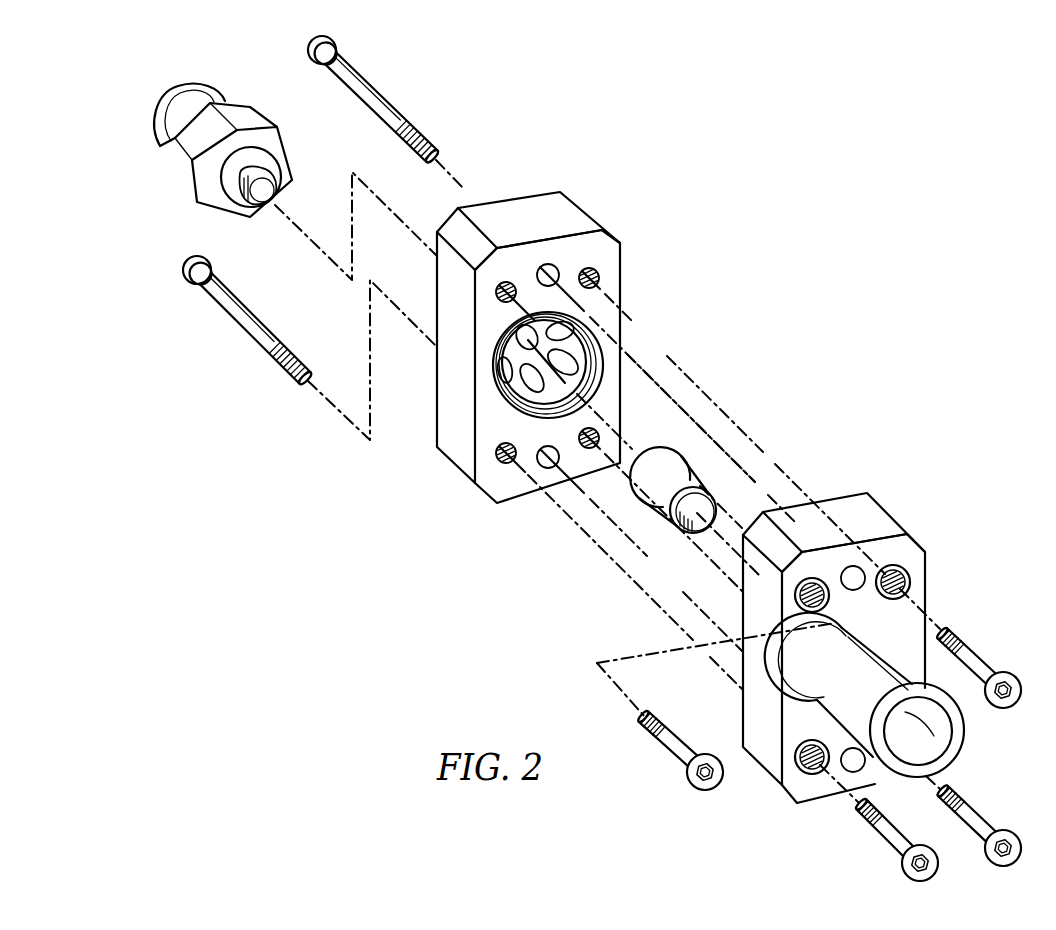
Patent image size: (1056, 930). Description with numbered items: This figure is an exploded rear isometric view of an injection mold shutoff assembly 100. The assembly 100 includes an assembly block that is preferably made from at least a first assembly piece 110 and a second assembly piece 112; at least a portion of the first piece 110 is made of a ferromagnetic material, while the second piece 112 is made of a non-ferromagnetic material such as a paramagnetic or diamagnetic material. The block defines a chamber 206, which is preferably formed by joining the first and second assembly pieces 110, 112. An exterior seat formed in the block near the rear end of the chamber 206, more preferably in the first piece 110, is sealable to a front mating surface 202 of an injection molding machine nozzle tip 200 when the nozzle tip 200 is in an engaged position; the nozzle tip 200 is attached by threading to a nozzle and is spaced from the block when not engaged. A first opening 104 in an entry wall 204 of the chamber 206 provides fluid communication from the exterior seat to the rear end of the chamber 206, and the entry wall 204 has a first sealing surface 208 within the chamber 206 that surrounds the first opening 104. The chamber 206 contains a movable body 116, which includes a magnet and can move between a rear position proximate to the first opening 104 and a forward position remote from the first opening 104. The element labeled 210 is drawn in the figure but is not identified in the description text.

The injection mold shutoff assembly 100 is at (803, 198).
The first opening 104 is at (520, 323).
The first assembly piece 110 is at (585, 214).
The second assembly piece 112 is at (895, 522).
The movable body 116 is at (737, 479).
The injection molding machine nozzle tip 200 is at (186, 174).
The front mating surface 202 is at (236, 140).
The entry wall 204 is at (513, 380).
The chamber 206 is at (585, 353).
The first sealing surface 208 is at (570, 318).
The plug 210 is at (658, 524).